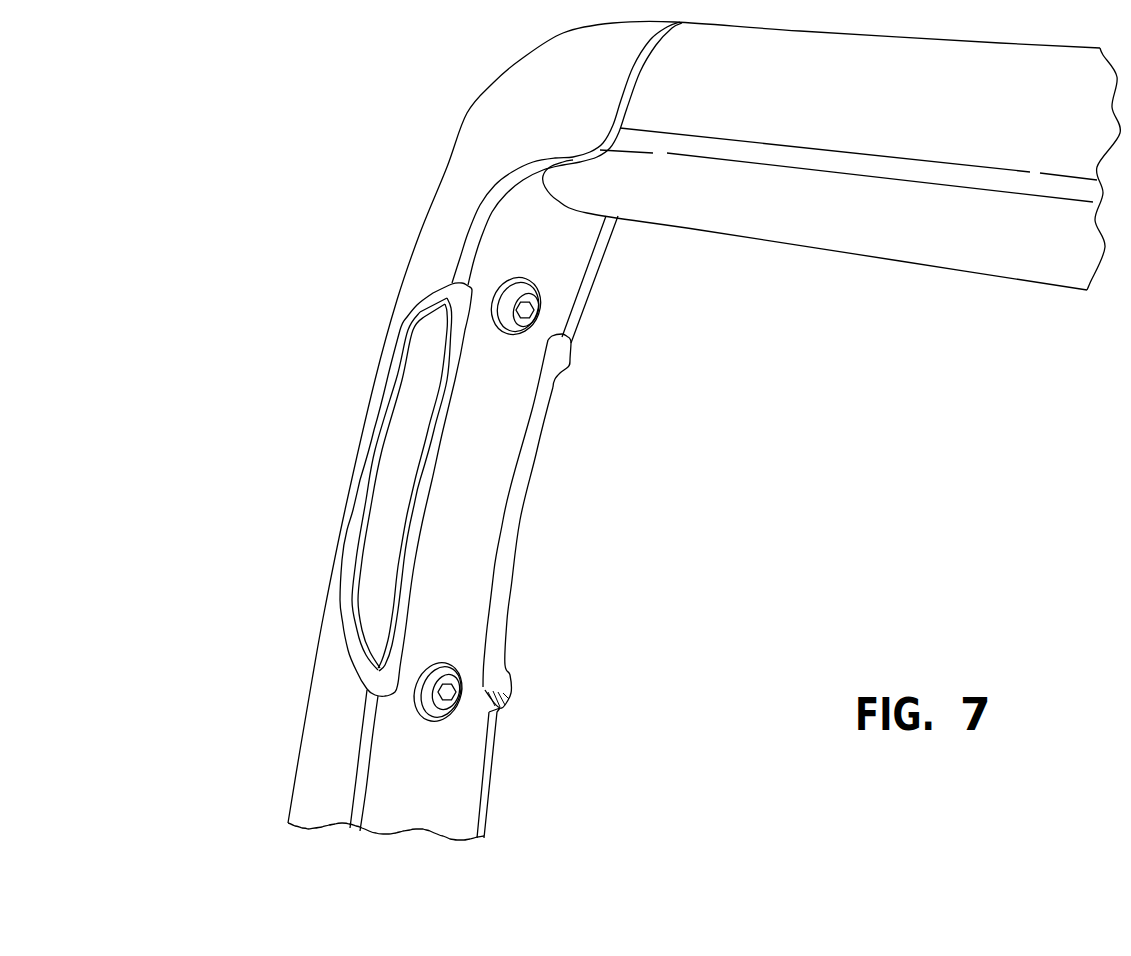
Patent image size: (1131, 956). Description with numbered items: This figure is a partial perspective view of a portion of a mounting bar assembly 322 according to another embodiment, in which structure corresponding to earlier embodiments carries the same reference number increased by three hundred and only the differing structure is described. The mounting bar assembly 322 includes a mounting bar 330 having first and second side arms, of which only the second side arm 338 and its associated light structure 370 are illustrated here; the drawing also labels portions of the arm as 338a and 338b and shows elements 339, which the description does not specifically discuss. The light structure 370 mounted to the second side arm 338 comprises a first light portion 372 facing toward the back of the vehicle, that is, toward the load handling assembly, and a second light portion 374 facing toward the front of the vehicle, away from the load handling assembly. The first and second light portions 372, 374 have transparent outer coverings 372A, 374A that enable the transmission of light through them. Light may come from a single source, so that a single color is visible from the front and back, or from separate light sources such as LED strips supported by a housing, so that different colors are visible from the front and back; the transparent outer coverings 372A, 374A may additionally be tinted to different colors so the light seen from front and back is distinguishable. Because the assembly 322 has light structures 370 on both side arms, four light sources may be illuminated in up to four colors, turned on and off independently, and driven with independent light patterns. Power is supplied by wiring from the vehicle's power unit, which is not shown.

The mounting bar assembly 322 is at (307, 383).
The mounting bar 330 is at (468, 118).
The second side arm 338 is at (440, 225).
The inner face of arm 338a is at (463, 778).
The outer flange of arm 338b is at (322, 745).
The fastener 339 is at (527, 311).
The light structure 370 is at (343, 573).
The first light portion 372 is at (517, 498).
The transparent outer covering 372A is at (532, 432).
The second light portion 374 is at (380, 500).
The transparent outer covering 374A is at (413, 402).